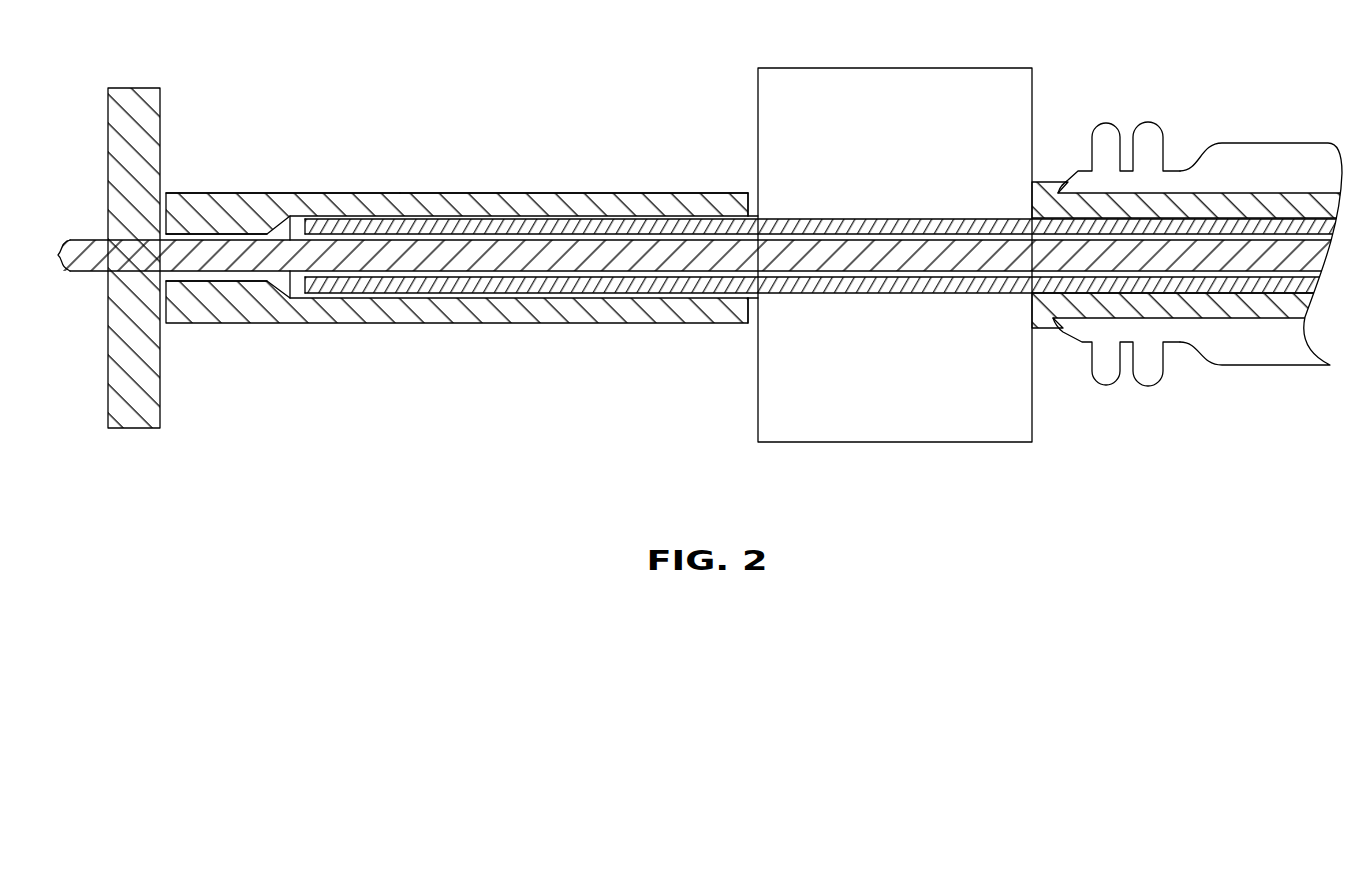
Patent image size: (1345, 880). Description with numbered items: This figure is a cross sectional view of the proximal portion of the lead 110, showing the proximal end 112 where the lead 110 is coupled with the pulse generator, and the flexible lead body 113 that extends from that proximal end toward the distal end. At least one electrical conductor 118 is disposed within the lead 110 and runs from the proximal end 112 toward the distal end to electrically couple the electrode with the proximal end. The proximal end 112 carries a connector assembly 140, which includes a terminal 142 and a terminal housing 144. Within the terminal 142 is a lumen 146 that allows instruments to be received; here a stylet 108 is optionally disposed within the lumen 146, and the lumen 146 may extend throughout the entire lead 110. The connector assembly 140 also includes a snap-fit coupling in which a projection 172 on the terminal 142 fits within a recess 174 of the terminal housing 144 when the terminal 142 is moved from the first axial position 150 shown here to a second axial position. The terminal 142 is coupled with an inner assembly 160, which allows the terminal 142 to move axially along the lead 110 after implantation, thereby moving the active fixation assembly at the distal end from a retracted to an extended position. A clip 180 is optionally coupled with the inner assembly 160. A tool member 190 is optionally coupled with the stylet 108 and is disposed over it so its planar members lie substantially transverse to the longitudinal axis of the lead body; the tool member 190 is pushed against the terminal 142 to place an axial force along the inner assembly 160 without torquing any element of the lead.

The stylet 108 is at (90, 240).
The lead 110 is at (701, 94).
The proximal end 112 is at (228, 195).
The lead body 113 is at (1289, 143).
The electrical conductor 118 is at (1186, 223).
The connector assembly 140 is at (510, 192).
The terminal 142 is at (268, 323).
The terminal housing 144 is at (1238, 313).
The lumen 146 is at (202, 263).
The first axial position 150 is at (434, 427).
The inner assembly 160 is at (512, 293).
The projection 172 is at (750, 316).
The recess 174 is at (1033, 316).
The clip 180 is at (758, 408).
The tool member 190 is at (133, 88).